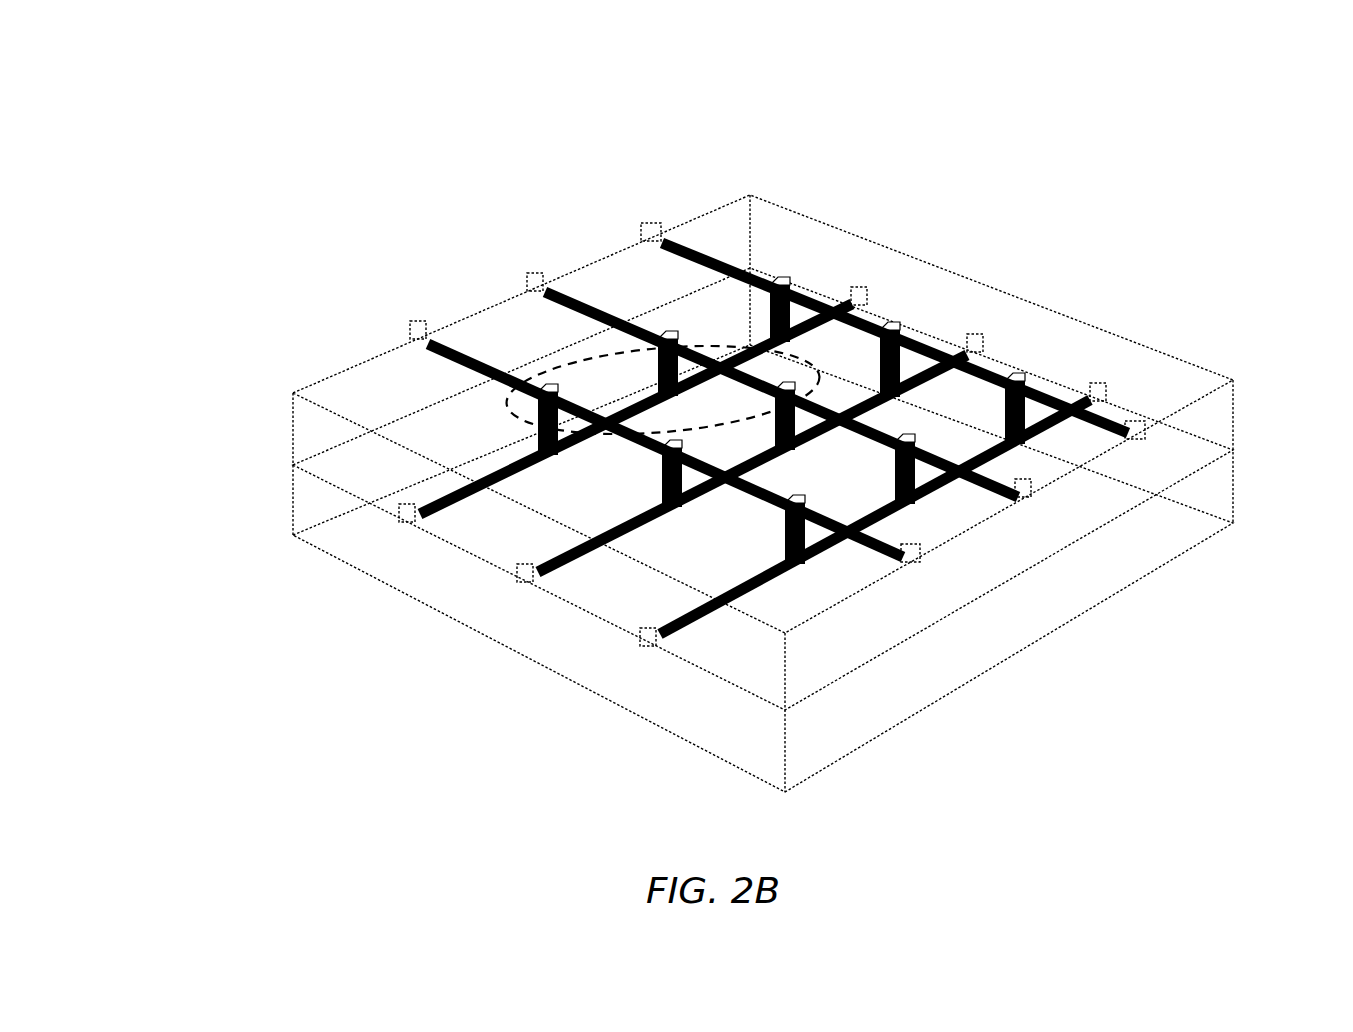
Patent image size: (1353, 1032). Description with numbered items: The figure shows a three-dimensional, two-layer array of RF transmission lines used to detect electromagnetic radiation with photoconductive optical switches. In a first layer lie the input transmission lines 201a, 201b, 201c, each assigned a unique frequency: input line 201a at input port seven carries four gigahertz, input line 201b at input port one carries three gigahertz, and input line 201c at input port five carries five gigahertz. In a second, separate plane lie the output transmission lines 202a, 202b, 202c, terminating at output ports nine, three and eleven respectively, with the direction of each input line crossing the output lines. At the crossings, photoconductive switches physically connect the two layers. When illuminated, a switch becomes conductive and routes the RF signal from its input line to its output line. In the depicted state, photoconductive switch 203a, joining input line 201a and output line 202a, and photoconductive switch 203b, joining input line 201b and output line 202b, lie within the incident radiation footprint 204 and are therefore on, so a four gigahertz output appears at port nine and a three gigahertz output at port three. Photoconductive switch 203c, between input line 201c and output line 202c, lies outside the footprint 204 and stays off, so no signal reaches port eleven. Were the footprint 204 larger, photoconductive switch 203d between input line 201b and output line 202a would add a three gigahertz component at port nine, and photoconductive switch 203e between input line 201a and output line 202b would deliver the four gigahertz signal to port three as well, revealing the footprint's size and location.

The input transmission line 201a is at (402, 530).
The input transmission line 201b is at (497, 579).
The input transmission line 201c is at (632, 651).
The output transmission line 202a is at (282, 206).
The output transmission line 202b is at (282, 206).
The output transmission line 202c is at (498, 150).
The photoconductive switch 203a is at (532, 388).
The photoconductive switch 203b is at (800, 372).
The photoconductive switch 203c is at (1022, 366).
The photoconductive switch 203d is at (665, 437).
The photoconductive switch 203e is at (667, 328).
The incident radiation footprint 204 is at (693, 350).